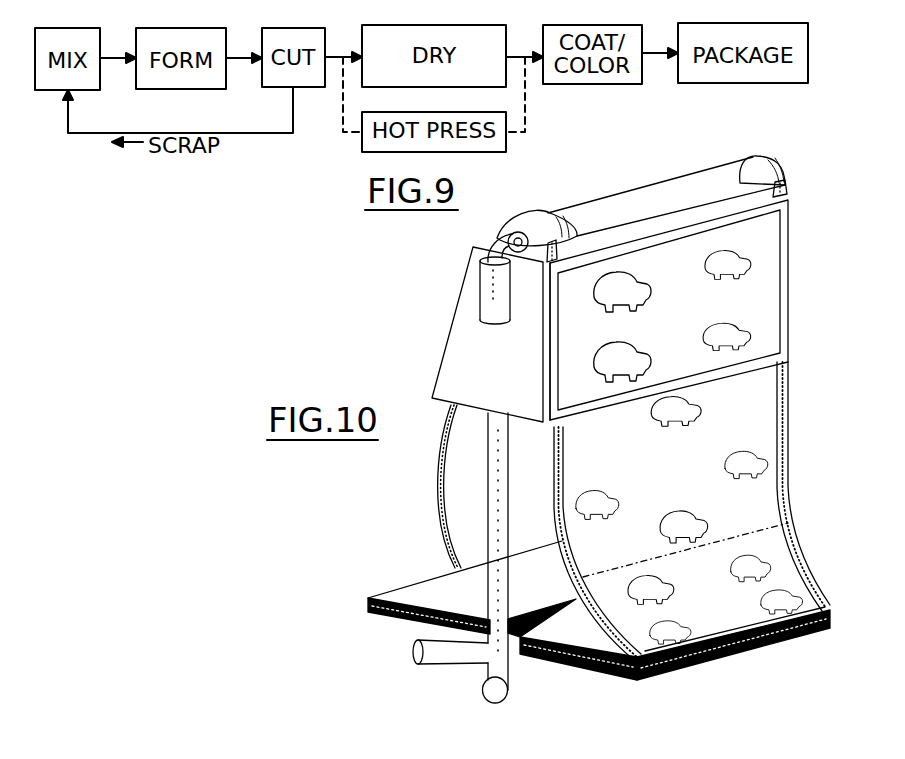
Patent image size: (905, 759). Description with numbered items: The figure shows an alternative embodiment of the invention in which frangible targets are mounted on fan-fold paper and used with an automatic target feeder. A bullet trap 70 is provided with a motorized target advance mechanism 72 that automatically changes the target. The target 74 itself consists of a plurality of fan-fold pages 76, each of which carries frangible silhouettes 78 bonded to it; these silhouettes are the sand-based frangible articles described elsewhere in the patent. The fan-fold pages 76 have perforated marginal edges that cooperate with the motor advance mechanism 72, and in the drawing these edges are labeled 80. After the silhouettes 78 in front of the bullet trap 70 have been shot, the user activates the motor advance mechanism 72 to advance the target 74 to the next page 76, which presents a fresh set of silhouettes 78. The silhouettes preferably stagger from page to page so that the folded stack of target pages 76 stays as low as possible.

The bullet trap 70 is at (599, 429).
The motorized target advance mechanism 72 is at (623, 310).
The target 74 is at (692, 511).
The fan-fold pages 76 is at (698, 521).
The frangible silhouettes 78 is at (710, 305).
The perforated edge strip 80 is at (692, 511).